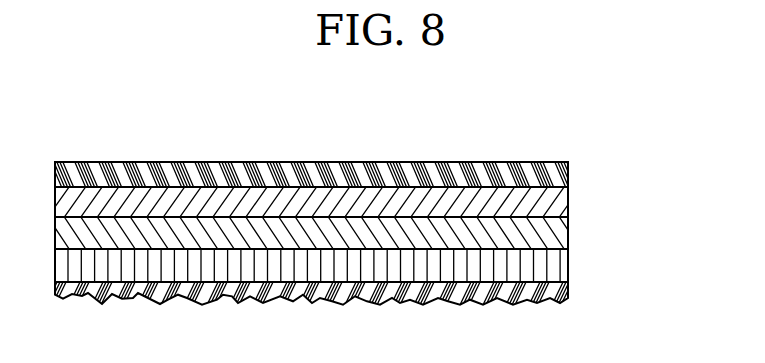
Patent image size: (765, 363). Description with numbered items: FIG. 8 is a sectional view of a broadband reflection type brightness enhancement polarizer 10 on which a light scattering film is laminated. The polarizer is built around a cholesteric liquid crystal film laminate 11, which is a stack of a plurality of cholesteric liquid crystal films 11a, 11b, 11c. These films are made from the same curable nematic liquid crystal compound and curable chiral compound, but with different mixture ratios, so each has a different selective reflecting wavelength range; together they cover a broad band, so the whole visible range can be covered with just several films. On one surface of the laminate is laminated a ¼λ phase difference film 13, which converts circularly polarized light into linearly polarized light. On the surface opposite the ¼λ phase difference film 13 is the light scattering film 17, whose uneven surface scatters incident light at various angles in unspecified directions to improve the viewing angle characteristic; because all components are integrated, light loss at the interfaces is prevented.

The broadband reflection type brightness enhancement polarizer 10 is at (586, 136).
The cholesteric liquid crystal film laminate 11 is at (365, 233).
The cholesteric liquid crystal film 11a is at (556, 203).
The cholesteric liquid crystal film 11b is at (556, 234).
The cholesteric liquid crystal film 11c is at (556, 265).
The ¼λ phase difference film 13 is at (556, 174).
The light scattering film 17 is at (556, 292).